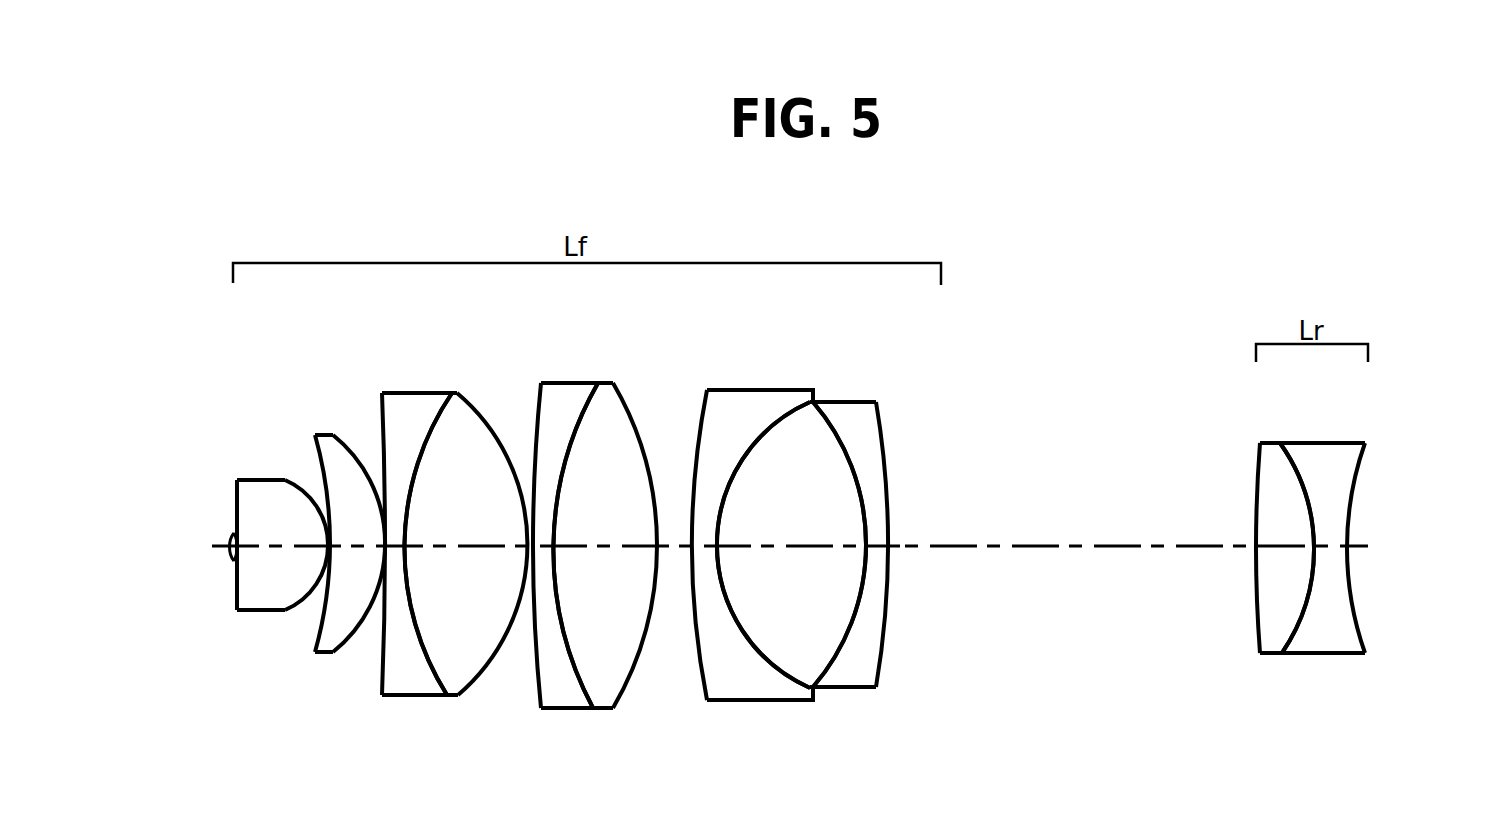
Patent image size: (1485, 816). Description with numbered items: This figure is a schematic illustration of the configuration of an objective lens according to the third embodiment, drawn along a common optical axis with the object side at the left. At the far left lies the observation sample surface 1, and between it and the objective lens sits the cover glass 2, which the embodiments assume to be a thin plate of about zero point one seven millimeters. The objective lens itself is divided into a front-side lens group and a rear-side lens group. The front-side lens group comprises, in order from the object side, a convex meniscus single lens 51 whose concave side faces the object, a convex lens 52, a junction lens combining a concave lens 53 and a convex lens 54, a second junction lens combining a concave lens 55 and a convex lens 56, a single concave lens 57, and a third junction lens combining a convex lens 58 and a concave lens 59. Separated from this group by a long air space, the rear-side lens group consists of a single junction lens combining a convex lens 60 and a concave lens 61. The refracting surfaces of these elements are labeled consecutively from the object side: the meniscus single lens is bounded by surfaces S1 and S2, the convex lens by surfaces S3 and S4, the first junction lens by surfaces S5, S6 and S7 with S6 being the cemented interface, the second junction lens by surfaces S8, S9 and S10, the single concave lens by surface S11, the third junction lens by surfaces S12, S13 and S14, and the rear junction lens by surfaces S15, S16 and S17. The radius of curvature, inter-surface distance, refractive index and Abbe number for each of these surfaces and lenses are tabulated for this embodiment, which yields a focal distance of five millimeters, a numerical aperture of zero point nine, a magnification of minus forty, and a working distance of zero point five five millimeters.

The observation sample surface 1 is at (230, 546).
The cover glass 2 is at (233, 535).
The convex meniscus single lens 51 is at (237, 547).
The convex lens 52 is at (316, 550).
The concave lens 53 is at (391, 542).
The convex lens 54 is at (465, 553).
The concave lens 55 is at (554, 559).
The convex lens 56 is at (608, 559).
The concave lens 57 is at (749, 557).
The convex lens 58 is at (807, 549).
The concave lens 59 is at (898, 546).
The convex lens 60 is at (1276, 559).
The concave lens 61 is at (1375, 543).
The surface S1 is at (235, 565).
The surface S2 is at (295, 615).
The surface S3 is at (316, 615).
The surface S4 is at (342, 648).
The surface S5 is at (380, 655).
The surface S6 is at (436, 678).
The surface S7 is at (478, 680).
The surface S8 is at (534, 672).
The surface S9 is at (584, 698).
The surface S10 is at (624, 698).
The surface S11 is at (700, 672).
The surface S12 is at (765, 650).
The surface S13 is at (838, 658).
The surface S14 is at (885, 640).
The surface S15 is at (1259, 623).
The surface S16 is at (1298, 636).
The surface S17 is at (1364, 618).